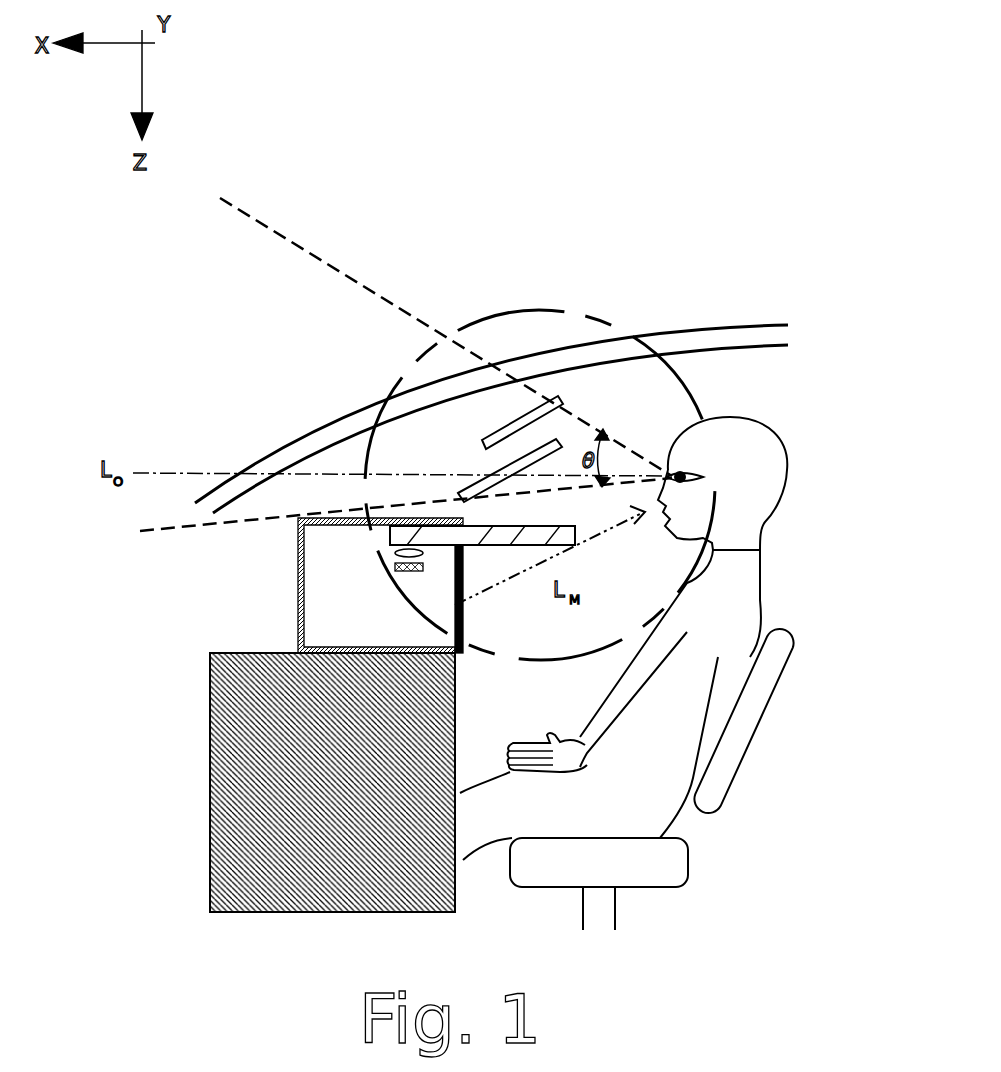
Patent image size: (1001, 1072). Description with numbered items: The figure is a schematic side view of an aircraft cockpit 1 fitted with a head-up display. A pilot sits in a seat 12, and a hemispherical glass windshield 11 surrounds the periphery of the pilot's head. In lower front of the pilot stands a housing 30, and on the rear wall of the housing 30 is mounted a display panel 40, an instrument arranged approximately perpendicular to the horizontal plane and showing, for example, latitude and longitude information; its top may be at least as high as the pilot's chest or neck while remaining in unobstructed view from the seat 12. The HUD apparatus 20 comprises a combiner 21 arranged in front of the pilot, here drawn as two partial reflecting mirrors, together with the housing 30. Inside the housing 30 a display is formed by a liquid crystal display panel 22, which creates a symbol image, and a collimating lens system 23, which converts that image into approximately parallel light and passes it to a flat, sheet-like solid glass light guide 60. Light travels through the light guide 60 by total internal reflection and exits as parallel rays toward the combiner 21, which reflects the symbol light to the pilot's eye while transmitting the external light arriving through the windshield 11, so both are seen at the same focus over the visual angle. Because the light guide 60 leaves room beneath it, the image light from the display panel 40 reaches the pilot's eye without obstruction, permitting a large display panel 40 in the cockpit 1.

The aircraft cockpit 1 is at (631, 145).
The windshield 11 is at (723, 325).
The seat 12 is at (762, 723).
The HUD apparatus 20 is at (397, 217).
The combiner 21 is at (460, 493).
The liquid crystal display panel 22 is at (395, 568).
The collimating lens system 23 is at (395, 553).
The housing 30 is at (430, 518).
The display panel 40 is at (455, 603).
The light guide 60 is at (530, 526).